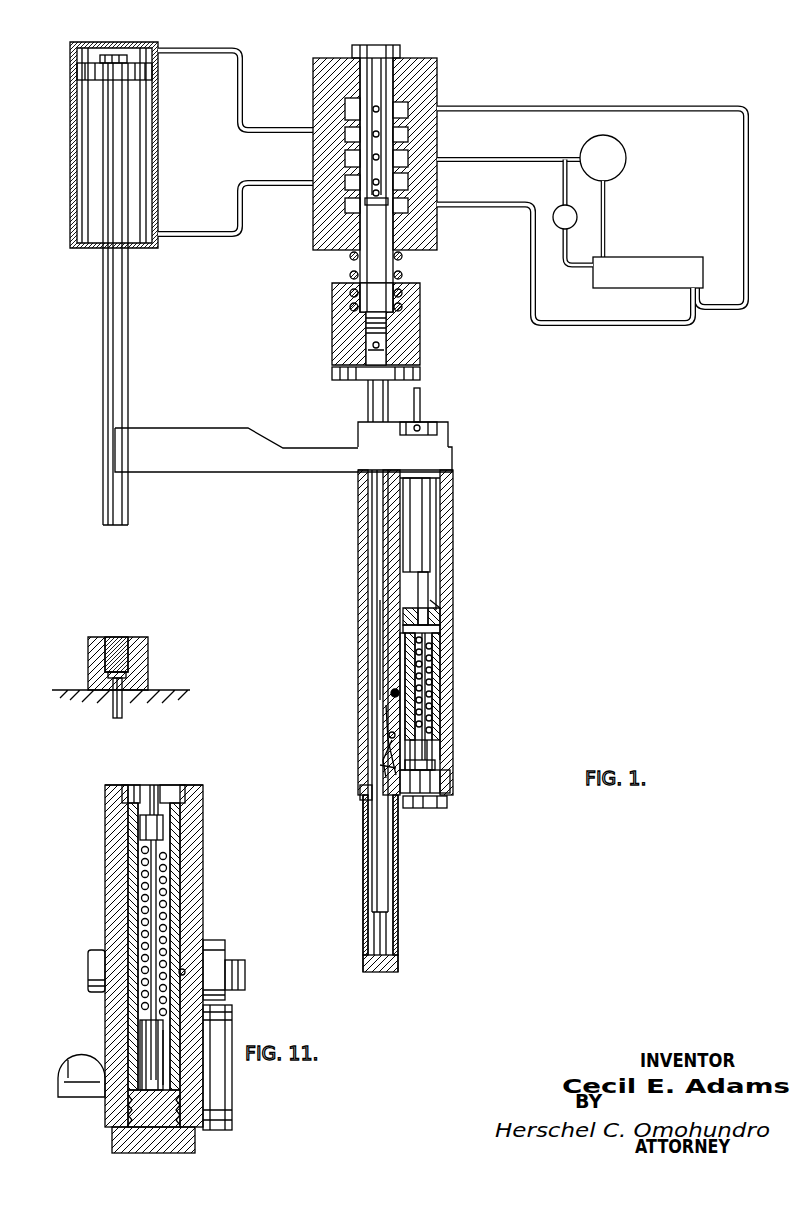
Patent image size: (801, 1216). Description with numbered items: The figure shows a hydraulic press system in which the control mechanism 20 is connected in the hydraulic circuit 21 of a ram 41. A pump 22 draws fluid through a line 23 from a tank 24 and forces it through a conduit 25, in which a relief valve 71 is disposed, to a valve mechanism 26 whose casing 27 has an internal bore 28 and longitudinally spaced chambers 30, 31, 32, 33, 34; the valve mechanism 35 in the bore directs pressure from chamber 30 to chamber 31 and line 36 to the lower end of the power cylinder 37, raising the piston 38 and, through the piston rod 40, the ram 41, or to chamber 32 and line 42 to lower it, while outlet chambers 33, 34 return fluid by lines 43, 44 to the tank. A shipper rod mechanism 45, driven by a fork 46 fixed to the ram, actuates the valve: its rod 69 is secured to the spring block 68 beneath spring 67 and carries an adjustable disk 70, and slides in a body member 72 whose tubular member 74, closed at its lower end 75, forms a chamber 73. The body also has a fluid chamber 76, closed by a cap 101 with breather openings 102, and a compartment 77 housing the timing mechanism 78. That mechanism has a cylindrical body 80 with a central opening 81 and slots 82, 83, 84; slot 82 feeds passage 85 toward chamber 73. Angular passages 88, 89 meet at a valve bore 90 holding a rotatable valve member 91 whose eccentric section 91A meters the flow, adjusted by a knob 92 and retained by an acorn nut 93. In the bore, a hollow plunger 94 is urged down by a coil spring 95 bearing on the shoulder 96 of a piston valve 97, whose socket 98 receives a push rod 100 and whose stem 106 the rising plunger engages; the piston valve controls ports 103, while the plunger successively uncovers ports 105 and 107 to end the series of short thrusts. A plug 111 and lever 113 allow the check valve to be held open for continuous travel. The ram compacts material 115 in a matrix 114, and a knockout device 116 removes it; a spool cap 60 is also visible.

In FIG. 1, the control mechanism 20 is at (275, 328).
In FIG. 1, the hydraulic circuit 21 is at (527, 98).
In FIG. 1, the pump 22 is at (626, 158).
In FIG. 1, the line 23 is at (607, 213).
In FIG. 1, the tank 24 is at (660, 263).
In FIG. 1, the conduit 25 is at (492, 157).
In FIG. 1, the valve mechanism 26 is at (375, 141).
In FIG. 1, the casing 27 is at (437, 60).
In FIG. 1, the internal bore 28 is at (345, 99).
In FIG. 1, the chamber 30 is at (345, 158).
In FIG. 1, the chamber 31 is at (410, 182).
In FIG. 1, the chamber 32 is at (410, 135).
In FIG. 1, the outlet chamber 33 is at (410, 206).
In FIG. 1, the outlet chamber 34 is at (410, 110).
In FIG. 1, the valve mechanism 35 is at (350, 112).
In FIG. 1, the line 36 is at (237, 200).
In FIG. 1, the power cylinder 37 is at (158, 142).
In FIG. 1, the piston 38 is at (78, 72).
In FIG. 1, the piston rod 40 is at (103, 197).
In FIG. 1, the ram 41 is at (110, 440).
In FIG. 1, the line 42 is at (237, 92).
In FIG. 1, the line 43 is at (533, 236).
In FIG. 1, the line 44 is at (672, 105).
In FIG. 1, the shipper rod mechanism 45 is at (425, 693).
In FIG. 1, the fork 46 is at (258, 408).
In FIG. 1, the valve stem cap 60 is at (368, 45).
In FIG. 1, the spring 67 is at (403, 280).
In FIG. 1, the spring block 68 is at (413, 321).
In FIG. 1, the rod 69 is at (368, 572).
In FIG. 1, the disk 70 is at (423, 377).
In FIG. 1, the relief valve 71 is at (558, 205).
In FIG. 1, the body member 72 is at (448, 614).
In FIG. 11, the body member 72 is at (108, 852).
In FIG. 1, the chamber 73 is at (366, 844).
In FIG. 1, the tubular member 74 is at (395, 866).
In FIG. 1, the closed lower end 75 is at (398, 963).
In FIG. 1, the chamber 76 is at (440, 552).
In FIG. 1, the compartment 77 is at (445, 687).
In FIG. 11, the compartment 77 is at (130, 930).
In FIG. 1, the timing mechanism 78 is at (453, 662).
In FIG. 11, the timing mechanism 78 is at (128, 903).
In FIG. 1, the cylindrical body 80 is at (432, 712).
In FIG. 11, the cylindrical body 80 is at (138, 1022).
In FIG. 1, the central opening 81 is at (415, 656).
In FIG. 11, the central opening 81 is at (142, 995).
In FIG. 11, the slot 82 is at (178, 880).
In FIG. 1, the slot 83 is at (392, 673).
In FIG. 1, the slot 84 is at (440, 676).
In FIG. 11, the passage 85 is at (190, 950).
In FIG. 1, the passage 88 is at (362, 787).
In FIG. 1, the passage 89 is at (445, 780).
In FIG. 1, the valve bore 90 is at (400, 760).
In FIG. 1, the rotatable valve member 91 is at (392, 750).
In FIG. 1, the eccentric section 91A is at (392, 768).
In FIG. 11, the knob 92 is at (232, 1091).
In FIG. 11, the acorn nut 93 is at (66, 1077).
In FIG. 1, the plunger 94 is at (437, 726).
In FIG. 11, the plunger 94 is at (118, 1105).
In FIG. 1, the coil spring 95 is at (453, 648).
In FIG. 1, the shoulder 96 is at (440, 640).
In FIG. 1, the piston valve 97 is at (403, 616).
In FIG. 11, the piston valve 97 is at (140, 828).
In FIG. 1, the socket 98 is at (445, 602).
In FIG. 1, the push rod 100 is at (428, 508).
In FIG. 11, the push rod 100 is at (160, 787).
In FIG. 1, the cap 101 is at (432, 424).
In FIG. 1, the breather openings 102 is at (421, 420).
In FIG. 1, the ports 103 is at (400, 632).
In FIG. 1, the port 105 is at (400, 740).
In FIG. 1, the stem 106 is at (432, 690).
In FIG. 11, the stem 106 is at (156, 922).
In FIG. 1, the port 107 is at (450, 742).
In FIG. 11, the port 107 is at (175, 1040).
In FIG. 11, the plug 111 is at (225, 975).
In FIG. 11, the lever 113 is at (245, 965).
In FIG. 1, the matrix 114 is at (150, 660).
In FIG. 1, the material 115 is at (128, 640).
In FIG. 1, the knockout device 116 is at (113, 705).